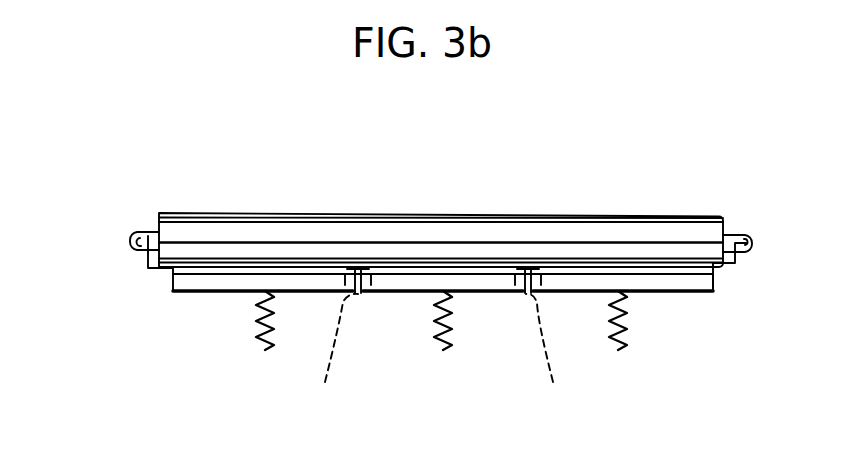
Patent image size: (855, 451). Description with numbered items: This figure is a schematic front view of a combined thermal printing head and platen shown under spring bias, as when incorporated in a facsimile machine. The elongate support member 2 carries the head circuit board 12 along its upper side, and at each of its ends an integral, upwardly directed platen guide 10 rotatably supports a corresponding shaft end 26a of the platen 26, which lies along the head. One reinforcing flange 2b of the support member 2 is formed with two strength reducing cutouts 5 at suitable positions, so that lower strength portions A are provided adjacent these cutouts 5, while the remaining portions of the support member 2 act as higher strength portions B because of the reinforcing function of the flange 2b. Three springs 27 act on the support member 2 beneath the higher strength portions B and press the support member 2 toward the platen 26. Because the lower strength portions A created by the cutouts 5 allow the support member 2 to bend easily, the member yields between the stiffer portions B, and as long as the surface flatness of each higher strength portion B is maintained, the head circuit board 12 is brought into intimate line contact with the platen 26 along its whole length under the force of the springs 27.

The support member 2 is at (182, 293).
The reinforcing flange 2b is at (685, 284).
The strength reducing cutout 5 is at (355, 295).
The platen guide 10 is at (138, 232).
The head circuit board 12 is at (483, 268).
The platen 26 is at (333, 232).
The shaft end 26a is at (131, 239).
The spring 27 is at (265, 350).
The lower strength portion A is at (438, 359).
The higher strength portion B is at (236, 272).